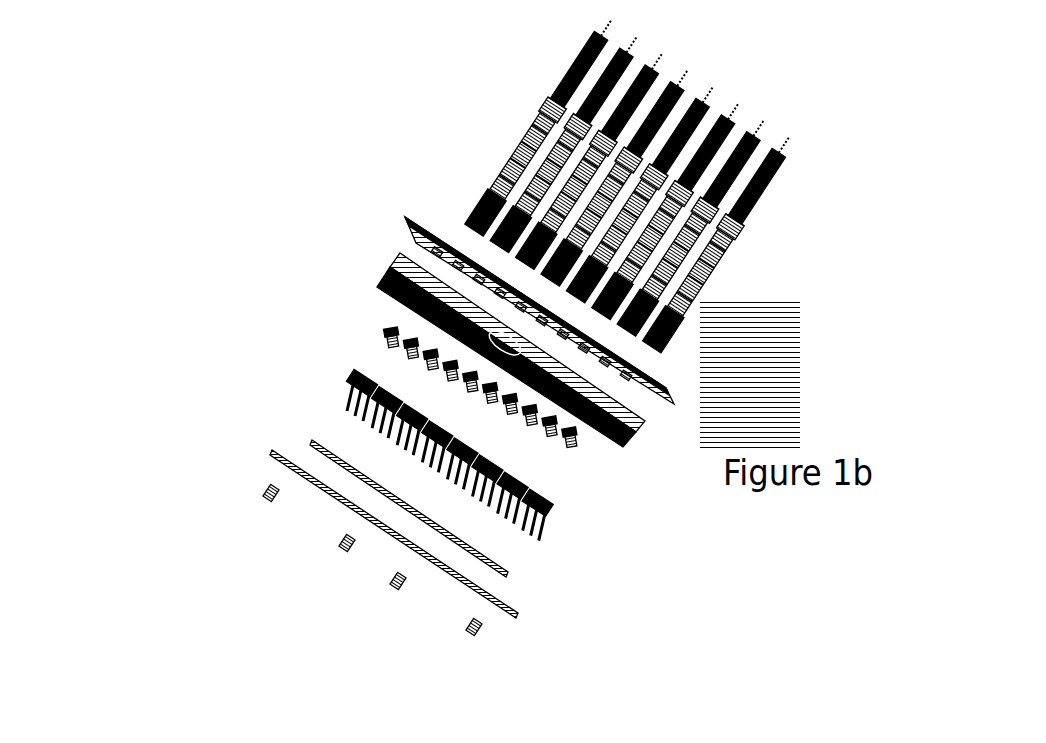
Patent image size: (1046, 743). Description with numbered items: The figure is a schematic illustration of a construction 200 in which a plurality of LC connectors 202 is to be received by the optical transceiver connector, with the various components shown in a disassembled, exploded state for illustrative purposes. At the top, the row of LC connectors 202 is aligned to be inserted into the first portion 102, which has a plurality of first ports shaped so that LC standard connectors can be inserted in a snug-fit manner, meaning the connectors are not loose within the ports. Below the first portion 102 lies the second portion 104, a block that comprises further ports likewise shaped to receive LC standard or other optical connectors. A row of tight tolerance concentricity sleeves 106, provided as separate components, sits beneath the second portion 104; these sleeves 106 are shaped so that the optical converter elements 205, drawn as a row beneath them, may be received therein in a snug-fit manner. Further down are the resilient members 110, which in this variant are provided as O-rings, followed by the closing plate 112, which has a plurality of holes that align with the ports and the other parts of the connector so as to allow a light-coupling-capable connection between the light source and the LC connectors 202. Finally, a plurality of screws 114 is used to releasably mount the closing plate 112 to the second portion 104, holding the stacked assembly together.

The construction 200 is at (212, 540).
The LC connectors 202 is at (493, 178).
The first portion 102 is at (407, 220).
The second portion 104 is at (387, 270).
The concentricity sleeves 106 is at (378, 333).
The optical converter elements 205 is at (343, 398).
The resilient members 110 is at (312, 440).
The closing plate 112 is at (272, 450).
The screws 114 is at (262, 488).